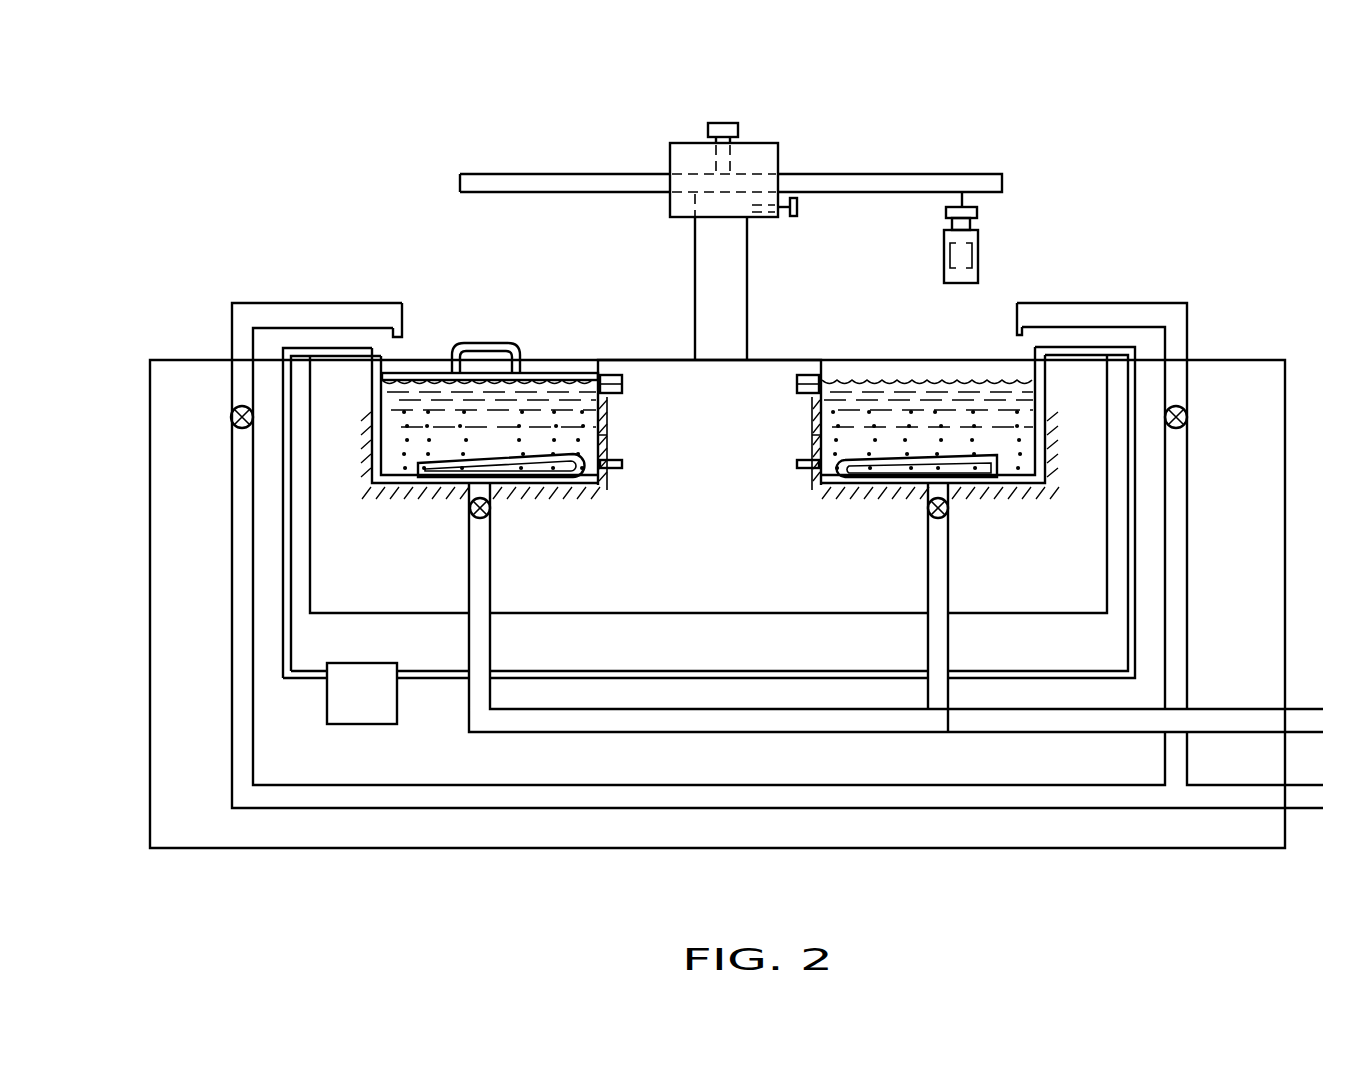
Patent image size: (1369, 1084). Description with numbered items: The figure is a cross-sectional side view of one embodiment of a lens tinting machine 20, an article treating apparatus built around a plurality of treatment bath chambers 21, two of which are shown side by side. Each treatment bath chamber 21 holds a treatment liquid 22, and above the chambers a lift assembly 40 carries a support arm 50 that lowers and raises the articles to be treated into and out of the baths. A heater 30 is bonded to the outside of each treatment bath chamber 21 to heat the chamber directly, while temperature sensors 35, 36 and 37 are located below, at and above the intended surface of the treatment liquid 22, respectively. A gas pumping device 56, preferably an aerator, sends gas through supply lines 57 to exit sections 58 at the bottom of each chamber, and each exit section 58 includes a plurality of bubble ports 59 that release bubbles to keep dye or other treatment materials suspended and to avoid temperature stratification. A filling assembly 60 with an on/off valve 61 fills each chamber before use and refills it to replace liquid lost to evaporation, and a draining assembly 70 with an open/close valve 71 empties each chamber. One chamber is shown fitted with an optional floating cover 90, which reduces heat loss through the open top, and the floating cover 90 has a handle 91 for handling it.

The lens tinting machine 20 is at (1230, 190).
The treatment bath chamber 21 is at (405, 400).
The treatment liquid 22 is at (438, 430).
The heater 30 is at (608, 435).
The temperature sensor 35 is at (624, 468).
The temperature sensor 36 is at (622, 393).
The temperature sensor 37 is at (624, 380).
The lift assembly 40 is at (800, 118).
The support arm 50 is at (936, 183).
The gas pumping device 56 is at (360, 705).
The supply line 57 is at (283, 563).
The exit section 58 is at (857, 458).
The bubble port 59 is at (928, 462).
The filling assembly 60 is at (255, 797).
The on/off valve 61 is at (240, 405).
The draining assembly 70 is at (775, 718).
The open/close valve 71 is at (474, 520).
The floating cover 90 is at (553, 373).
The handle 91 is at (490, 348).